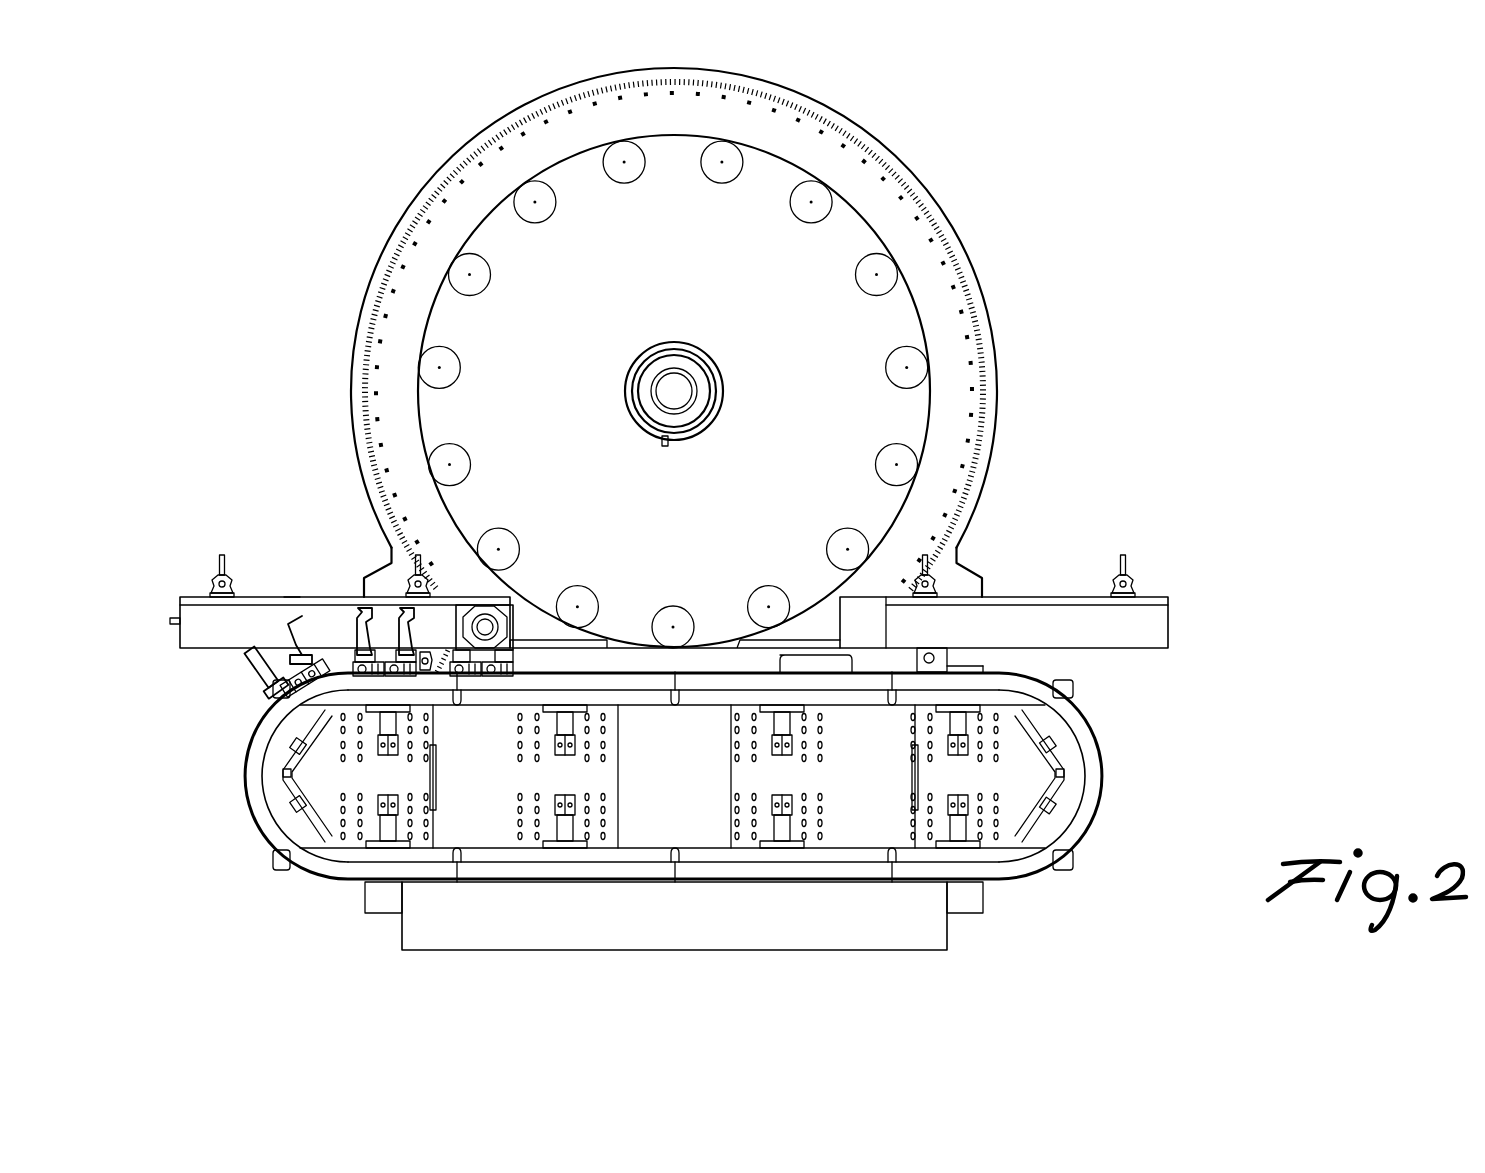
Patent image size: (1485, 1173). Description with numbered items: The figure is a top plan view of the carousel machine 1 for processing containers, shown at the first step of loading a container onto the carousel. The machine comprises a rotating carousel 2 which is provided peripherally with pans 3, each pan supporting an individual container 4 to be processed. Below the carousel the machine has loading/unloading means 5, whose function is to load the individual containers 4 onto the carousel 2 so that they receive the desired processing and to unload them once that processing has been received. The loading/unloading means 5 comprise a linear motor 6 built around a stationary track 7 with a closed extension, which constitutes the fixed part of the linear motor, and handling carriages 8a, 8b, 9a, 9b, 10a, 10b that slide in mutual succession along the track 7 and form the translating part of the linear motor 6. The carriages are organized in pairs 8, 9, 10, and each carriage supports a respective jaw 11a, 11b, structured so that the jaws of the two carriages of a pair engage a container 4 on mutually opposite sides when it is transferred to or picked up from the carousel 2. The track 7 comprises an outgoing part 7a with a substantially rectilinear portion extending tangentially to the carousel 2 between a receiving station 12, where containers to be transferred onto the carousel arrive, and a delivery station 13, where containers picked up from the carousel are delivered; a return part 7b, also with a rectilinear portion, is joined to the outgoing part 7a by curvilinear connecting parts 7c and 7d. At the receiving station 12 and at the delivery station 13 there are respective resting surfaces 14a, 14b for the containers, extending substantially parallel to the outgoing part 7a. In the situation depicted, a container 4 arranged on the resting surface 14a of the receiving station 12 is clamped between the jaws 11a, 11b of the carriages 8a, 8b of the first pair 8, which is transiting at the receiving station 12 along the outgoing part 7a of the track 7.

The carousel machine 1 is at (1114, 210).
The rotating carousel 2 is at (868, 207).
The pans 3 is at (462, 276).
The container 4 is at (486, 625).
The loading/unloading means 5 is at (763, 899).
The linear motor 6 is at (247, 701).
The stationary track 7 is at (318, 881).
The outgoing part 7a is at (626, 680).
The return part 7b is at (628, 870).
The connecting part 7c is at (1084, 773).
The connecting part 7d is at (275, 805).
The first pair of carriages 8 is at (481, 680).
The handling carriage 8a is at (500, 678).
The handling carriage 8b is at (462, 678).
The pair of carriages 9 is at (389, 682).
The handling carriage 9a is at (390, 650).
The handling carriage 9b is at (372, 678).
The pair of carriages 10 is at (305, 750).
The handling carriage 10a is at (324, 658).
The handling carriage 10b is at (296, 700).
The jaw 11a is at (292, 616).
The jaw 11b is at (372, 652).
The receiving station 12 is at (290, 603).
The delivery station 13 is at (1023, 614).
The resting surface 14a is at (205, 622).
The resting surface 14b is at (1145, 624).